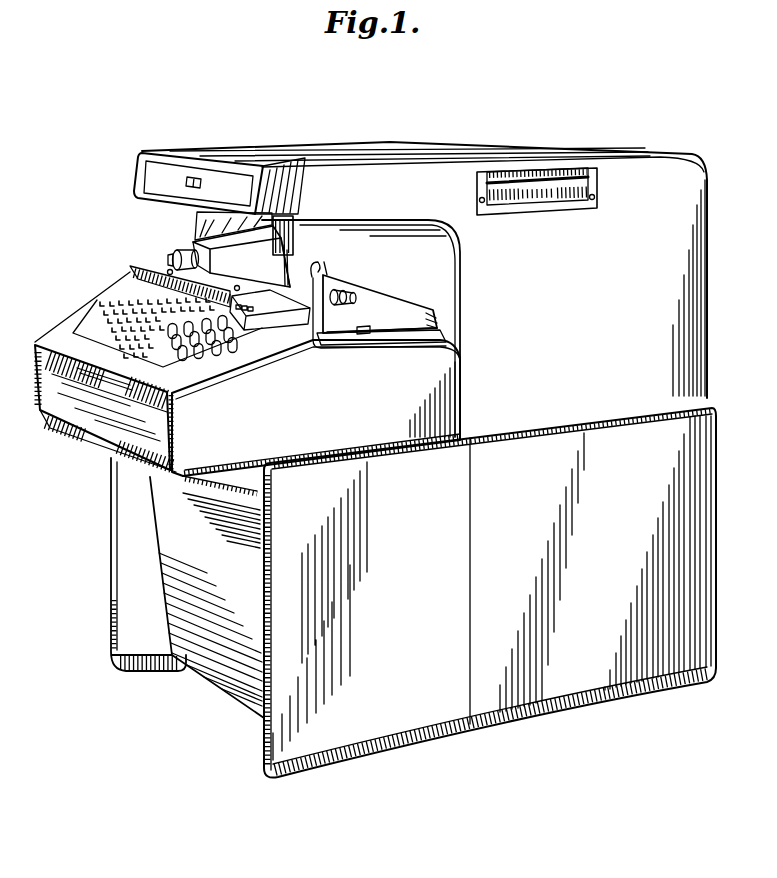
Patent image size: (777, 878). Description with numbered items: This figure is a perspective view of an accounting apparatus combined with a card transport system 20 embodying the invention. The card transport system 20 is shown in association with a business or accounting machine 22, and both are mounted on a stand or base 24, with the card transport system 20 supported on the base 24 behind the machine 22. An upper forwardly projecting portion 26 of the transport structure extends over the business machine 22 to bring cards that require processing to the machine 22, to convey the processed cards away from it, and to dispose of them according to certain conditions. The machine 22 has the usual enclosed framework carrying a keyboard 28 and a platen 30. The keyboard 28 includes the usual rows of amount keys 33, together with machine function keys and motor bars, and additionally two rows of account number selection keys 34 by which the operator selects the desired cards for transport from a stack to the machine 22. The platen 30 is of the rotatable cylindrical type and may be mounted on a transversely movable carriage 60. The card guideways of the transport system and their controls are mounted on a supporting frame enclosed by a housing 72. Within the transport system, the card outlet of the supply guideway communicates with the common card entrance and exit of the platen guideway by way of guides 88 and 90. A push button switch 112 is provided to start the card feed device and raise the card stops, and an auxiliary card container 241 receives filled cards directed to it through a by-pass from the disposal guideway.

The card transport system 20 is at (655, 154).
The business or accounting machine 22 is at (383, 426).
The stand or base 24 is at (616, 562).
The upper forwardly projecting portion 26 is at (228, 153).
The keyboard 28 is at (80, 330).
The platen 30 is at (293, 310).
The amount keys 33 is at (150, 352).
The account number selection keys 34 is at (100, 318).
The transversely movable carriage 60 is at (381, 288).
The housing 72 is at (578, 323).
The guide 88 is at (294, 245).
The guide 90 is at (194, 245).
The push button switch 112 is at (192, 176).
The auxiliary card container 241 is at (541, 190).